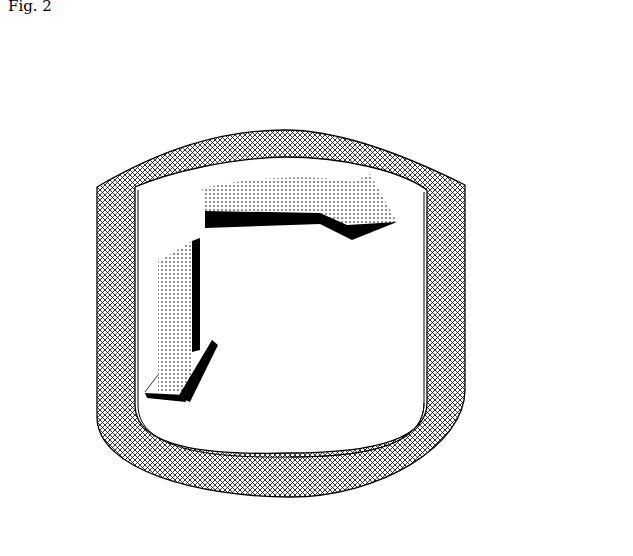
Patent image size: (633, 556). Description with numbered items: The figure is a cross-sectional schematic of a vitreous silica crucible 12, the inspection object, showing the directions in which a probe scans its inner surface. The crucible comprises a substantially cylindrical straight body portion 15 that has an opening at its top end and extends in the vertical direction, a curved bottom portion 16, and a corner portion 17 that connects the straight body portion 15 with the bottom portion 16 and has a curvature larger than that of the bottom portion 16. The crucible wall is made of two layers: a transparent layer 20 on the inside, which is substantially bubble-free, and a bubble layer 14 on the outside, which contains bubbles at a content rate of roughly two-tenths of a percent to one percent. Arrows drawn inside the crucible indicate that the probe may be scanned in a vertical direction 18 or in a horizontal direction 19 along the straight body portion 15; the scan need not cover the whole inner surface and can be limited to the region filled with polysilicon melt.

The container body 12 is at (455, 148).
The bubble layer 14 is at (442, 312).
The straight body portion 15 is at (85, 188).
The bottom portion 16 is at (190, 503).
The corner portion 17 is at (78, 442).
The vertical direction 18 is at (181, 256).
The horizontal direction 19 is at (273, 198).
The transparent layer 20 is at (423, 408).